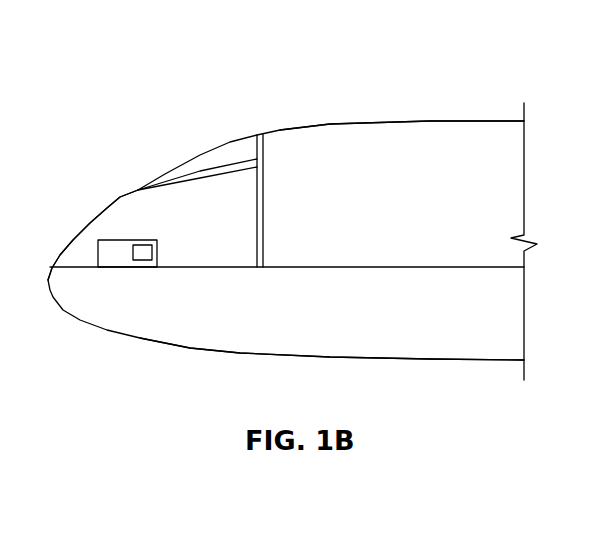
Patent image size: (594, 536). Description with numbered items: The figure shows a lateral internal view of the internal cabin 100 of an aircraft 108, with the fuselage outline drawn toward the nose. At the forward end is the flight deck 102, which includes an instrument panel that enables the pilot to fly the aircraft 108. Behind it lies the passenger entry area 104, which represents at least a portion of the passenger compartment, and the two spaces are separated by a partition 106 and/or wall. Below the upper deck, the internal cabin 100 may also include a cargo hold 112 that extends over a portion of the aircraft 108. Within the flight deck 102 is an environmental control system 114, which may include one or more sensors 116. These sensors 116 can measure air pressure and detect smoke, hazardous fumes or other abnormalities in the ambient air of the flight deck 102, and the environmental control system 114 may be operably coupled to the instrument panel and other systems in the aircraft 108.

The internal cabin 100 is at (234, 76).
The flight deck 102 is at (112, 188).
The passenger entry area 104 is at (484, 157).
The partition 106 is at (275, 183).
The aircraft 108 is at (402, 122).
The cargo hold 112 is at (312, 350).
The environmental control system 114 is at (104, 262).
The sensors 116 is at (146, 278).